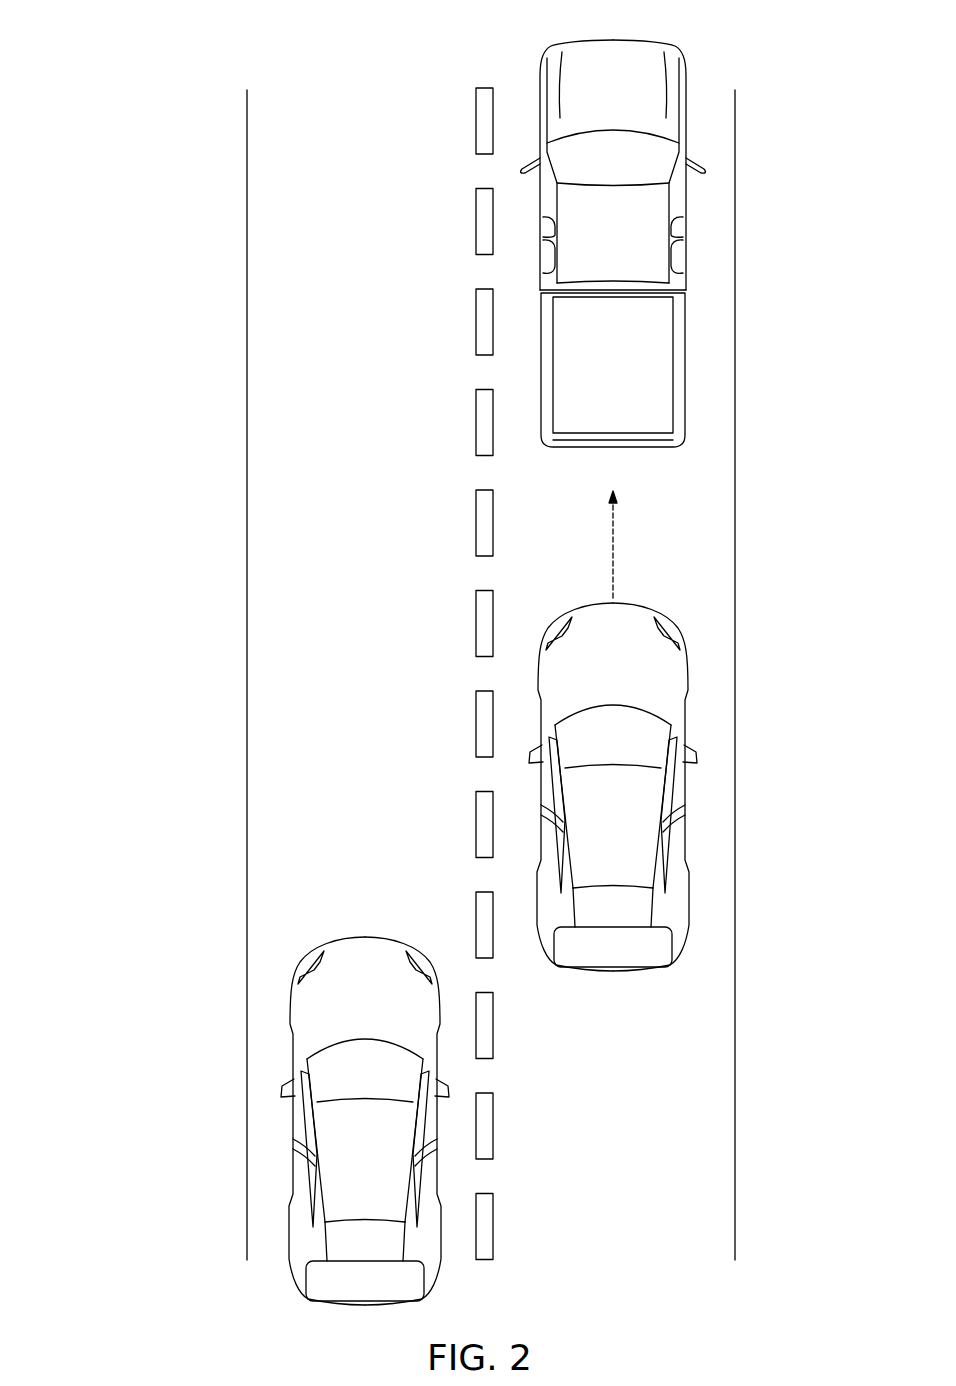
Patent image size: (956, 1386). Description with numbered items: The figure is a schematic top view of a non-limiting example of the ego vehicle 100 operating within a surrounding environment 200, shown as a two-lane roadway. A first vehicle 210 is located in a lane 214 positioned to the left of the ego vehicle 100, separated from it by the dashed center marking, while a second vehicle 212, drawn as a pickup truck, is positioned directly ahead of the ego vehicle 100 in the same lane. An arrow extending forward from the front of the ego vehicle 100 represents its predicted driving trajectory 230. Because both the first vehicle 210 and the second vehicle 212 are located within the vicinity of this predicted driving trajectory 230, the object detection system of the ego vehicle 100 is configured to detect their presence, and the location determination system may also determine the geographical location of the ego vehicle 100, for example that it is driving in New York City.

The ego vehicle 100 is at (686, 806).
The surrounding environment 200 is at (408, 665).
The first vehicle 210 is at (365, 937).
The second vehicle 212 is at (685, 270).
The lane 214 is at (356, 630).
The predicted driving trajectory 230 is at (614, 534).